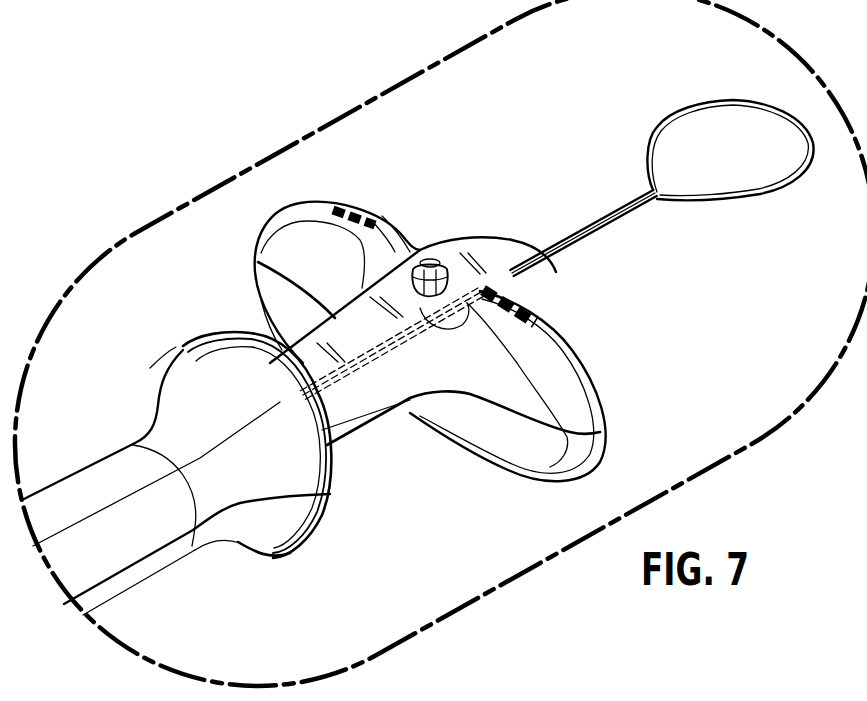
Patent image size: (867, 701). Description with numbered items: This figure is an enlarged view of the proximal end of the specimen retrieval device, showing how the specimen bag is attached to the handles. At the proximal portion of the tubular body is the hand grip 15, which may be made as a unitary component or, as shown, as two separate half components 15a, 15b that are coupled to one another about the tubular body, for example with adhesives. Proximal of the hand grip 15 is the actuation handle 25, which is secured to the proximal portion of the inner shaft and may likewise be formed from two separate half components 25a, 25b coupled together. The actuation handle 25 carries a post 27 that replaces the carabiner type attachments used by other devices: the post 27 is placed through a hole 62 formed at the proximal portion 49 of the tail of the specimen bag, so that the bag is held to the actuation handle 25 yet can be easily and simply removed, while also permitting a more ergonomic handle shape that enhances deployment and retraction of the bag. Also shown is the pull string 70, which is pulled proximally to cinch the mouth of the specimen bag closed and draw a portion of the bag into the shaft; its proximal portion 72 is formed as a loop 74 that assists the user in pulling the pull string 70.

The hand grip 15 is at (88, 478).
The half component of hand grip 15a is at (178, 403).
The half component of hand grip 15b is at (268, 541).
The actuation handle 25 is at (300, 357).
The half component of actuation handle 25a is at (567, 390).
The half component of actuation handle 25b is at (573, 458).
The post 27 is at (424, 259).
The proximal portion of tail 49 is at (478, 253).
The hole 62 is at (430, 297).
The pull string 70 is at (528, 268).
The proximal portion of pull string 72 is at (547, 252).
The loop 74 is at (734, 100).